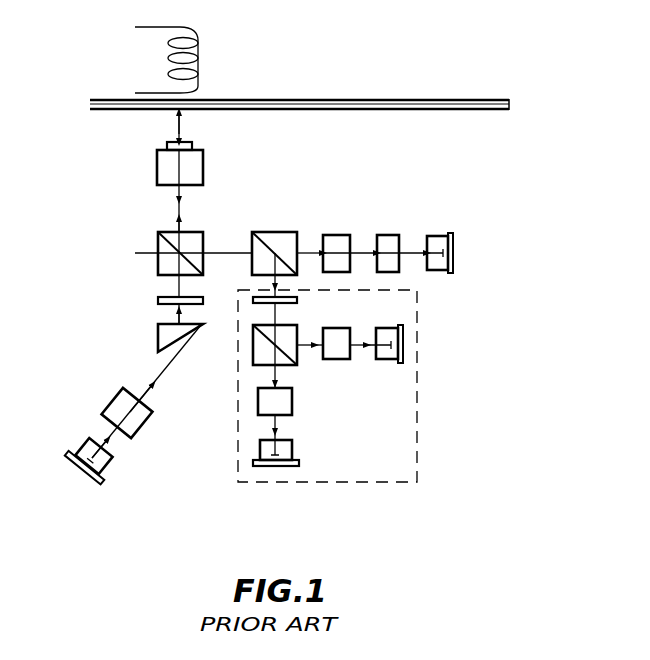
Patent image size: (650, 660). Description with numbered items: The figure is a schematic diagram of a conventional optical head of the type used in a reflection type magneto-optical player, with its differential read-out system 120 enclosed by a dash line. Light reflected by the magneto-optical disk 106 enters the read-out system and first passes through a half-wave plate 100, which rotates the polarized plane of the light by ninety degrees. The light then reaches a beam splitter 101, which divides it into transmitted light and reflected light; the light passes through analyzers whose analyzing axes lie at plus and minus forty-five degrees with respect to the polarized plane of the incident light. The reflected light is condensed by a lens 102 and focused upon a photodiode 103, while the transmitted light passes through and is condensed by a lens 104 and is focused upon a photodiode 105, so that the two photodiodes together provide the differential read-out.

The half-wave plate 100 is at (297, 300).
The beam splitter 101 is at (253, 353).
The lens 102 is at (328, 360).
The photodiode 103 is at (385, 360).
The lens 104 is at (258, 403).
The photodiode 105 is at (260, 450).
The magneto-optical disk 106 is at (512, 103).
The differential read-out system 120 is at (382, 481).